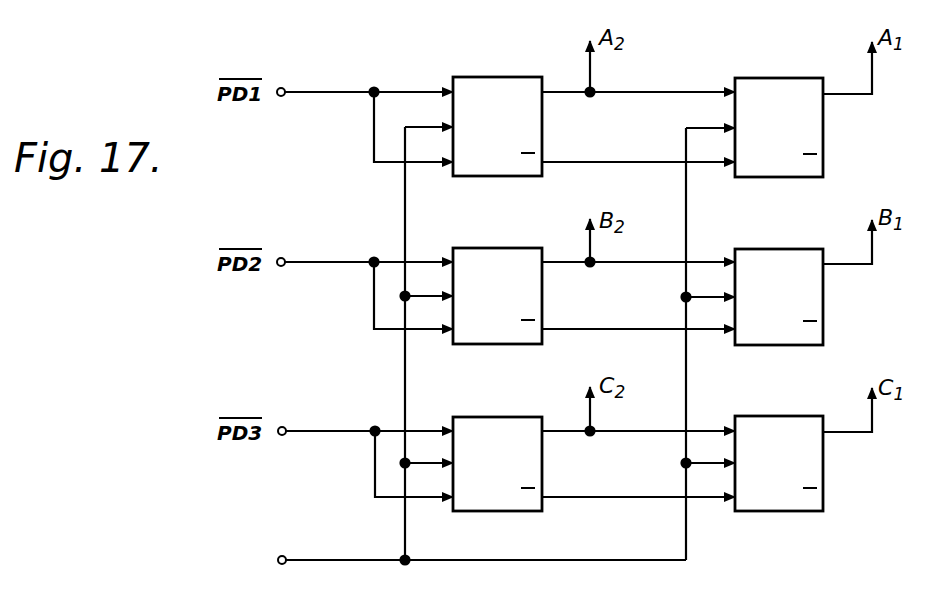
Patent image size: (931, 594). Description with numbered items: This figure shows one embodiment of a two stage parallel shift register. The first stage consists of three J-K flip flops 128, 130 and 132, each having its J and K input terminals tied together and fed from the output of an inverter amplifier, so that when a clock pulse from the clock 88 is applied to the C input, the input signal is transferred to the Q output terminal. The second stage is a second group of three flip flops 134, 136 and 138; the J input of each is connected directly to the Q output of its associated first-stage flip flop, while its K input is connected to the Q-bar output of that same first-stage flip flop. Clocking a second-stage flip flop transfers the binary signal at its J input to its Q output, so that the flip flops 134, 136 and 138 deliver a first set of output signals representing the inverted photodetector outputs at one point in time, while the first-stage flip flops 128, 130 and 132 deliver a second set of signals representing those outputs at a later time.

The J-K flip flop 128 is at (505, 77).
The J-K flip flop 130 is at (505, 248).
The J-K flip flop 132 is at (505, 417).
The flip flop 134 is at (783, 78).
The flip flop 136 is at (775, 249).
The flip flop 138 is at (768, 416).
The clock 88 is at (433, 352).